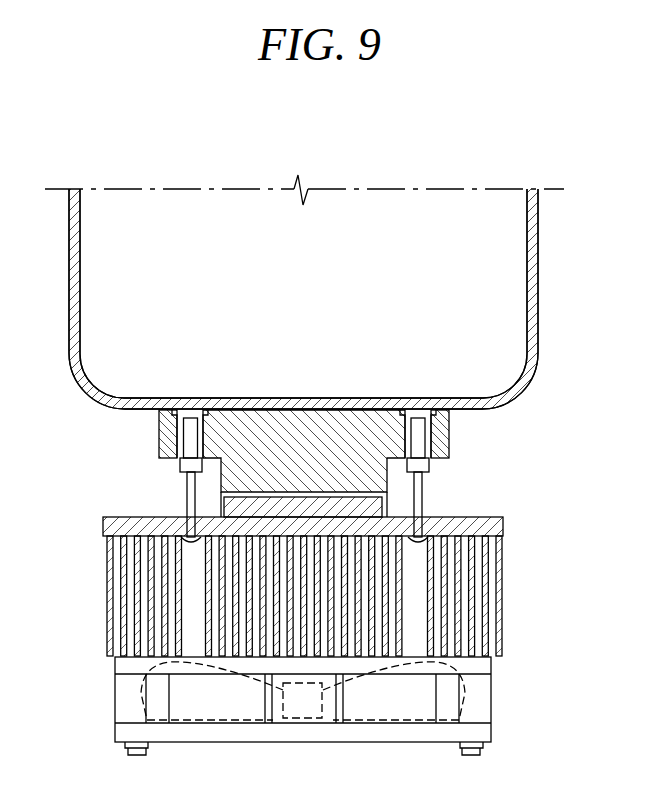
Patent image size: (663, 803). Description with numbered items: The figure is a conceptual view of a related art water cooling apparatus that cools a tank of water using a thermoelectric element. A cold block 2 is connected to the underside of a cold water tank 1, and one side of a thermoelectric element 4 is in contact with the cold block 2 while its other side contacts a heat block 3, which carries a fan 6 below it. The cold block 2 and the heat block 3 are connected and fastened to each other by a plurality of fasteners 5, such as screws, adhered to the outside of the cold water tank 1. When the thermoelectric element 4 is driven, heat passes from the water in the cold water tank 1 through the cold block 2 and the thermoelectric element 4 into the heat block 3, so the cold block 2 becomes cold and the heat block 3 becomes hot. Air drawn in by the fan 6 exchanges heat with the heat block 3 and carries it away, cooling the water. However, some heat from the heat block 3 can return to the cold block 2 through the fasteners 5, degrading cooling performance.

The cold water tank 1 is at (538, 277).
The cold block 2 is at (449, 438).
The heat block 3 is at (503, 525).
The thermoelectric element 4 is at (378, 507).
The fastener 5 is at (187, 491).
The fan 6 is at (491, 697).